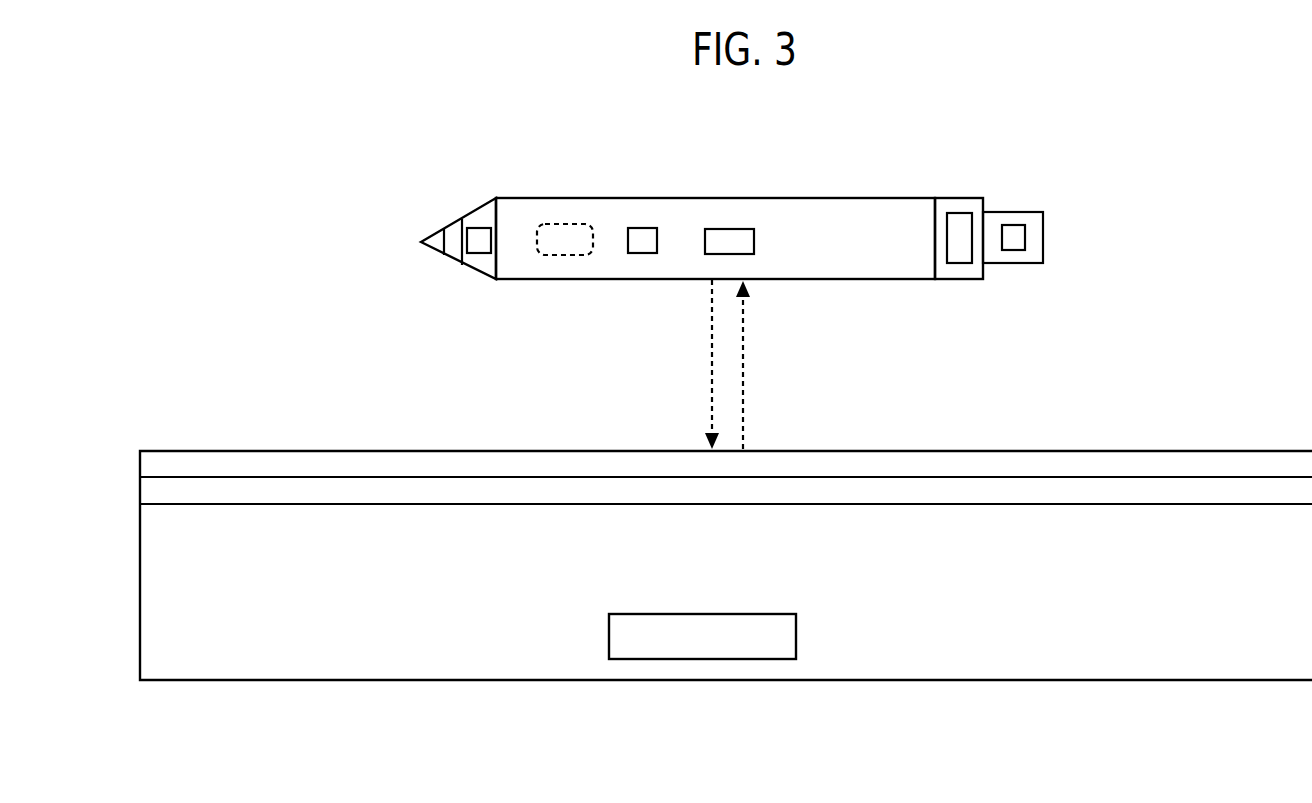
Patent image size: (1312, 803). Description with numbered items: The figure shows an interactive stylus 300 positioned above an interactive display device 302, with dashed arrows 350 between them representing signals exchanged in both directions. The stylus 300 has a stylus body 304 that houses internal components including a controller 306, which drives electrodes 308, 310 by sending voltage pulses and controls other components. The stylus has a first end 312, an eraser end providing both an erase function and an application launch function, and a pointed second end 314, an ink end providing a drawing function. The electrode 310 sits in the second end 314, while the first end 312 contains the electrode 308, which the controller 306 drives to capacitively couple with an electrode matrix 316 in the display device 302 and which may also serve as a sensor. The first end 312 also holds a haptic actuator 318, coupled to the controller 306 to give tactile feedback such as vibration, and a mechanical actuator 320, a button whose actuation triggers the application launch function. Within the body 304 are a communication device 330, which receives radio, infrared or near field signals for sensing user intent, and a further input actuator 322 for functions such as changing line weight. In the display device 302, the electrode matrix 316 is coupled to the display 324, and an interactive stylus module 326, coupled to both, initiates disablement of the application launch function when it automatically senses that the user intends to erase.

The interactive stylus 300 is at (807, 150).
The interactive display device 302 is at (1222, 405).
The stylus body 304 is at (631, 198).
The controller 306 is at (757, 229).
The electrode 308 is at (1025, 238).
The electrode 310 is at (480, 254).
The first end 312 is at (1050, 190).
The second end 314 is at (498, 196).
The electrode matrix 316 is at (140, 462).
The haptic actuator 318 is at (947, 236).
The mechanical actuator 320 is at (1005, 263).
The input actuator 322 is at (537, 244).
The display 324 is at (140, 490).
The interactive stylus module 326 is at (609, 636).
The communication device 330 is at (638, 228).
The arrows 350 is at (710, 373).